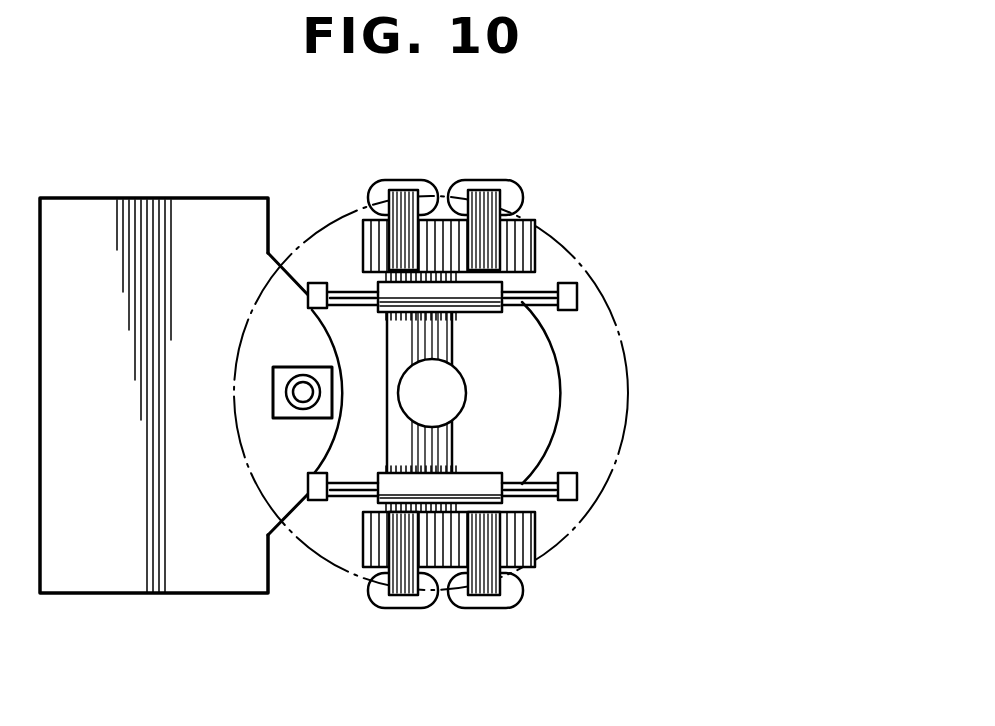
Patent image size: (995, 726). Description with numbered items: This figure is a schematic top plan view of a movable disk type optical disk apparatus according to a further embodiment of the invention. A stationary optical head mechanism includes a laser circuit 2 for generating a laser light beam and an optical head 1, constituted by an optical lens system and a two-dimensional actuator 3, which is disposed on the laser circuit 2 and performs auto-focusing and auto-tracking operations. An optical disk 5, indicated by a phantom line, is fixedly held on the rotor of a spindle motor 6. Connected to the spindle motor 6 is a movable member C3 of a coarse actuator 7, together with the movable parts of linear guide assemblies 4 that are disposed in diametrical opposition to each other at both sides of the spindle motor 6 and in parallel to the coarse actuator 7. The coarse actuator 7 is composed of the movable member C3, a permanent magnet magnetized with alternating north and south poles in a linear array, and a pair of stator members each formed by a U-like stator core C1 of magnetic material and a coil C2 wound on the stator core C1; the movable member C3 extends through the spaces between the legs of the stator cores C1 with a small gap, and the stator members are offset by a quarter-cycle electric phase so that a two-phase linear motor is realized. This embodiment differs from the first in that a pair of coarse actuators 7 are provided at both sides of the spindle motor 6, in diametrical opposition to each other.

The optical head 1 is at (303, 390).
The laser circuit 2 is at (198, 214).
The two-dimensional actuator 3 is at (290, 420).
The linear guide assembly 4 is at (565, 314).
The optical disk 5 is at (585, 267).
The spindle motor 6 is at (546, 413).
The coarse actuator 7 is at (448, 612).
The stator core C1 is at (401, 184).
The coil C2 is at (512, 187).
The movable member C3 is at (527, 537).